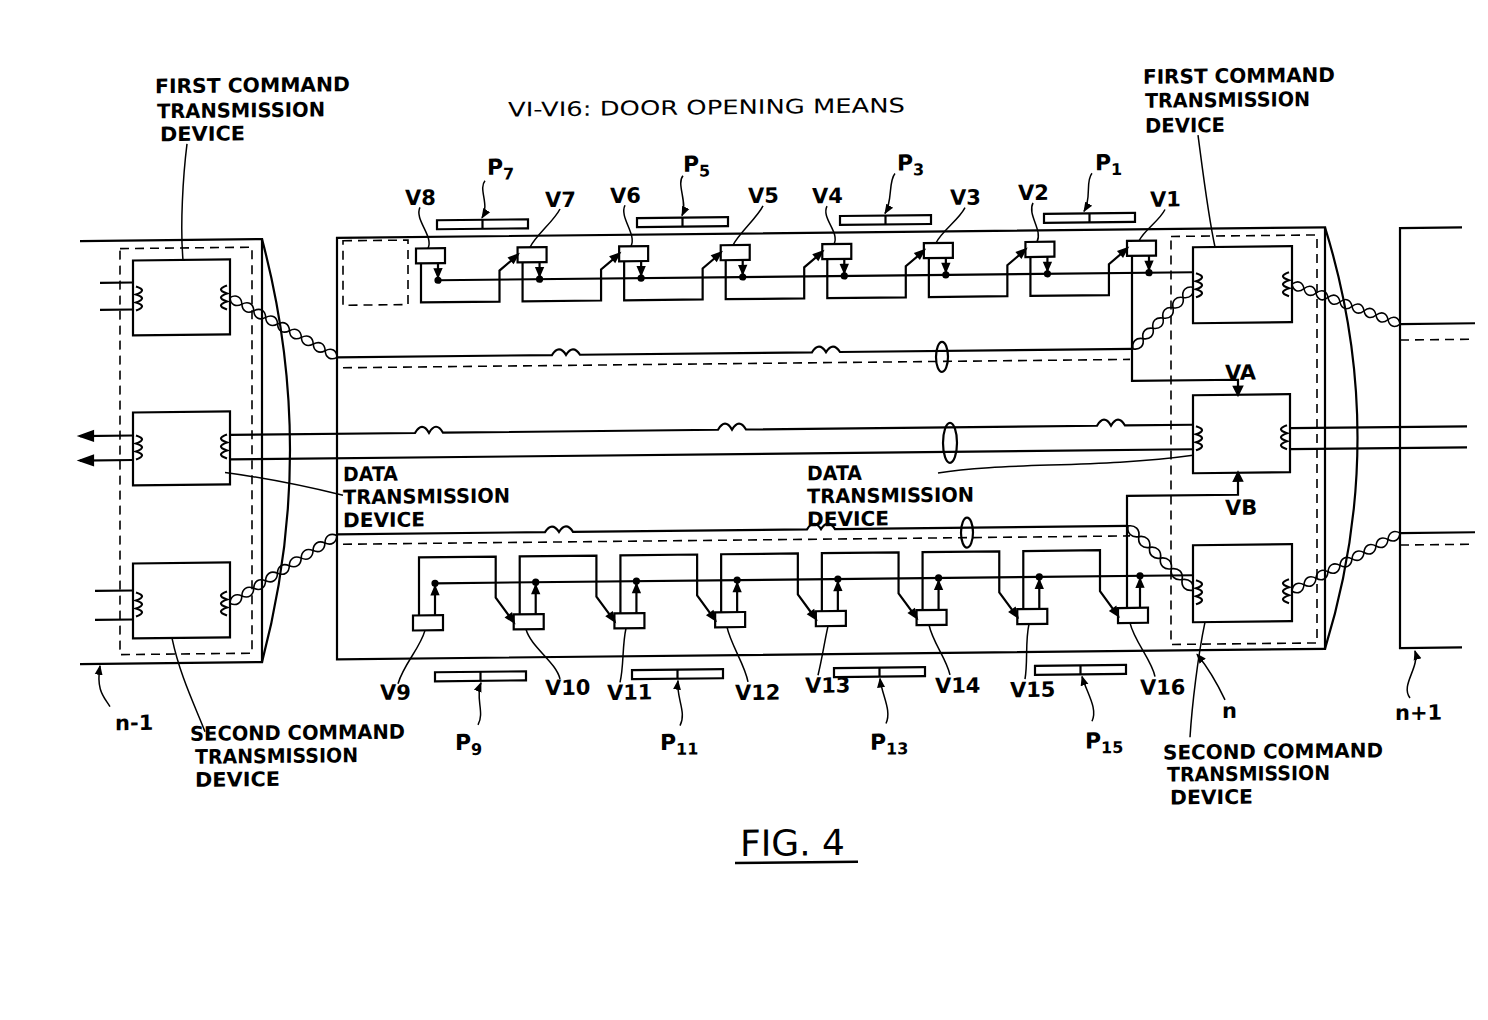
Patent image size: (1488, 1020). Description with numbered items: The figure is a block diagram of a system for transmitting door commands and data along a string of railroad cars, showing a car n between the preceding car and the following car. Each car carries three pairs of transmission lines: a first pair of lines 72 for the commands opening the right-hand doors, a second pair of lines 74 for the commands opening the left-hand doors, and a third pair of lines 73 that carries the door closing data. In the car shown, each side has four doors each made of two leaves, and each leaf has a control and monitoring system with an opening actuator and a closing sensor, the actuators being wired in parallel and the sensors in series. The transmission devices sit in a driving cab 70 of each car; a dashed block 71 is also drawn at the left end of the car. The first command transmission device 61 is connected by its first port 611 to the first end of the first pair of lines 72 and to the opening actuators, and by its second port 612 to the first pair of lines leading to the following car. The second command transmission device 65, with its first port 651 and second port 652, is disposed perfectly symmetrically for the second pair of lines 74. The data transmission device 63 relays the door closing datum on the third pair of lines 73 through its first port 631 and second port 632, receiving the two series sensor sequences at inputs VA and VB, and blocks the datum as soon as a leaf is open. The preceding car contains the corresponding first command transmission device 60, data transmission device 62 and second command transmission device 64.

The first command transmission device 60 is at (185, 331).
The first command transmission device 61 is at (1242, 283).
The data transmission device 62 is at (175, 481).
The data transmission device 63 is at (1251, 460).
The second command transmission device 64 is at (199, 648).
The second command transmission device 65 is at (1268, 625).
The driving cab 70 is at (200, 241).
The control unit 71 is at (372, 236).
The first pair of transmission lines 72 is at (951, 346).
The third pair of transmission lines 73 is at (956, 425).
The second pair of transmission lines 74 is at (973, 518).
The first port 611 is at (1205, 298).
The second port 612 is at (1282, 283).
The first port 631 is at (1206, 444).
The second port 632 is at (1280, 449).
The first port 651 is at (1204, 605).
The second port 652 is at (1283, 619).